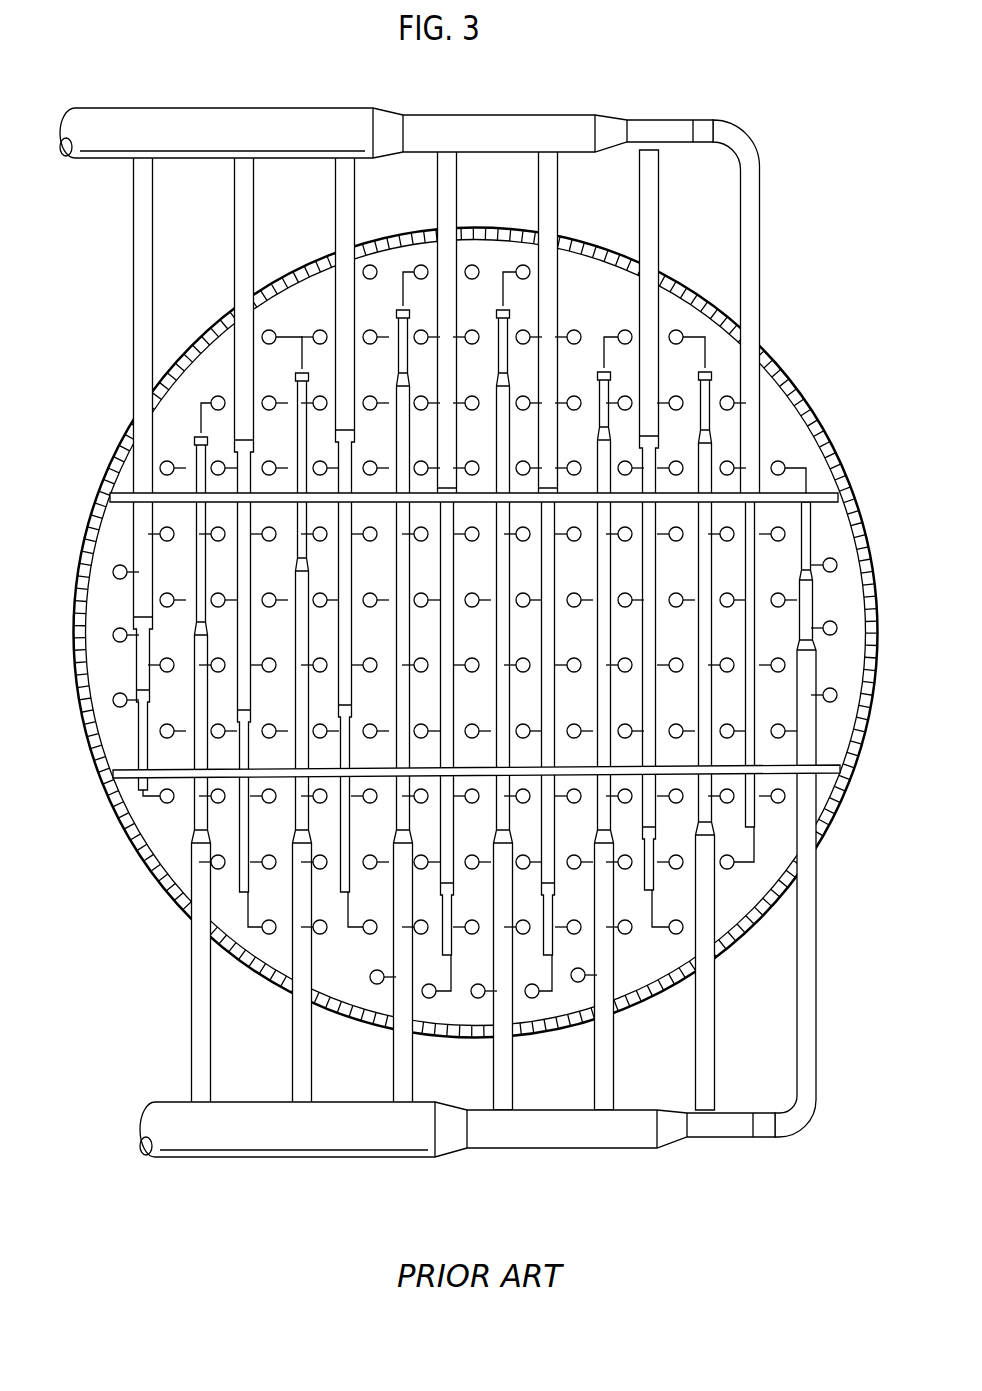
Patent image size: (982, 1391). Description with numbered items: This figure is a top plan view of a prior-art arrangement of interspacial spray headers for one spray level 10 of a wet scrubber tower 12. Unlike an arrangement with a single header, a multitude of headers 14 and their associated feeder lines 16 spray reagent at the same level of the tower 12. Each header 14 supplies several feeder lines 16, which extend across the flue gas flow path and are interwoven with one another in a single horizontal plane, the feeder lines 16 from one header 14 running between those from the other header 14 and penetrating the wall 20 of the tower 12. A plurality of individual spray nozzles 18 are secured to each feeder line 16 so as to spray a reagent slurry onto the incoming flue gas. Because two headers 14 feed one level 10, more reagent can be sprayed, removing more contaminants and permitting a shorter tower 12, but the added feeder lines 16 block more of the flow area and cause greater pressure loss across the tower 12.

The spray level 10 is at (458, 633).
The scrubber tower 12 is at (786, 372).
The header 14 is at (200, 128).
The feeder line 16 is at (336, 226).
The spray nozzle 18 is at (614, 330).
The wall 20 is at (838, 797).